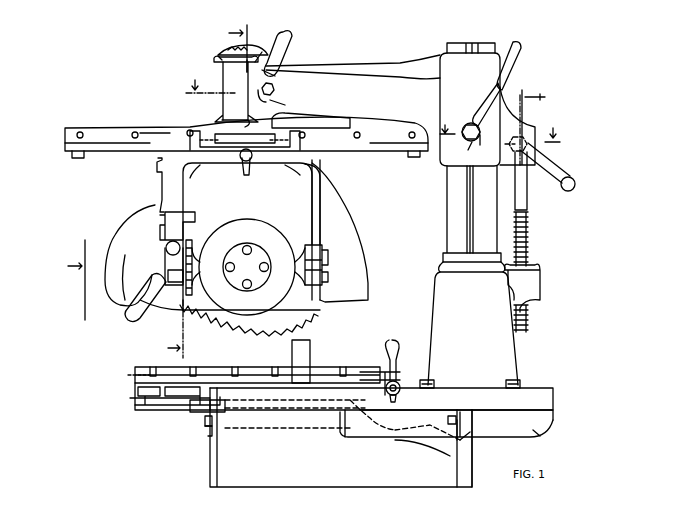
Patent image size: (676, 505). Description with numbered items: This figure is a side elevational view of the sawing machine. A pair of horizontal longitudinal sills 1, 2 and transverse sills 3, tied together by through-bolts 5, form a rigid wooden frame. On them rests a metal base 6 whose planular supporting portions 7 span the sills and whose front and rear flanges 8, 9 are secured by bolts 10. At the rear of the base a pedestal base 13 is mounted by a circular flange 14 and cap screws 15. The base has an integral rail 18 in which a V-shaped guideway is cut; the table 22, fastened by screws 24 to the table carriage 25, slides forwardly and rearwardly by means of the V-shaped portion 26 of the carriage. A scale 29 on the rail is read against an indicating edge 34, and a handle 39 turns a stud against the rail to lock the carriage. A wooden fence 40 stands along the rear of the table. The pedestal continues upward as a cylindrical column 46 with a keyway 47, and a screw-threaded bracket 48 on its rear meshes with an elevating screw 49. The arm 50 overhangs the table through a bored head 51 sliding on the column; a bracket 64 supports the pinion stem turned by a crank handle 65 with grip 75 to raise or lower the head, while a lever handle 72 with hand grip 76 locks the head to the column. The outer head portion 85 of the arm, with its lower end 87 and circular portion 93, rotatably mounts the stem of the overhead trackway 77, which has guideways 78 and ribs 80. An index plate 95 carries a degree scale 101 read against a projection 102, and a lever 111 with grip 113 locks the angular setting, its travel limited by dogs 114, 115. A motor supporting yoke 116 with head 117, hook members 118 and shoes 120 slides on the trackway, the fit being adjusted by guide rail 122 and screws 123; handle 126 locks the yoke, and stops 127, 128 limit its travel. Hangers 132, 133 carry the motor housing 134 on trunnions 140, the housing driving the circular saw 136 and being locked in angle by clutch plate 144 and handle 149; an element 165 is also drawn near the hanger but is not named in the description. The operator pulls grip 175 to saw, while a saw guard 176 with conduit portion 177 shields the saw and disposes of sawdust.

The supporting frame member or sill 1 is at (212, 468).
The supporting frame member or sill 2 is at (474, 462).
The transverse sill 3 is at (71, 280).
The through-bolt 5 is at (171, 329).
The metal base 6 is at (550, 430).
The supporting portion 7 is at (556, 414).
The front flange 8 is at (233, 48).
The rear flange 9 is at (209, 81).
The bolt 10 is at (447, 123).
The pedestal base 13 is at (435, 297).
The circular flange 14 is at (553, 392).
The cap screw 15 is at (433, 380).
The rail 18 is at (204, 412).
The table 22 is at (145, 366).
The screw 24 is at (124, 374).
The table carriage 25 is at (134, 395).
The V-shaped portion 26 is at (135, 408).
The scale 29 is at (371, 410).
The indicating edge 34 is at (372, 390).
The handle 39 is at (399, 350).
The fence 40 is at (311, 356).
The cylindrical column 46 is at (445, 204).
The keyway 47 is at (466, 182).
The screw-threaded bracket 48 is at (536, 292).
The elevating screw 49 is at (530, 206).
The arm 50 is at (366, 70).
The head 51 is at (442, 58).
The bracket 64 is at (538, 127).
The crank handle 65 is at (546, 168).
The lever handle 72 is at (490, 100).
The handle grip 75 is at (576, 183).
The hand grip 76 is at (521, 46).
The trackway 77 is at (98, 143).
The guideway 78 is at (479, 134).
The rib 80 is at (222, 127).
The head portion 85 is at (222, 68).
The lower end of head 87 is at (240, 122).
The circular portion of head 93 is at (255, 65).
The index plate 95 is at (258, 50).
The scale 101 is at (228, 48).
The projection 102 is at (217, 58).
The lever 111 is at (275, 74).
The handle grip 113 is at (291, 35).
The dog 114 is at (275, 103).
The dog 115 is at (282, 90).
The motor supporting yoke 116 is at (212, 166).
The head 117 is at (266, 165).
The hook member 118 is at (295, 128).
The shoe 120 is at (243, 140).
The guide rail 122 is at (147, 130).
The screw 123 is at (133, 132).
The lever or handle 126 is at (244, 176).
The stop 127 is at (66, 153).
The stop 128 is at (410, 156).
The hanger 132 is at (316, 222).
The hanger 133 is at (180, 212).
The motor housing 134 is at (260, 228).
The circular saw 136 is at (212, 330).
The trunnion 140 is at (329, 268).
The clutch plate 144 is at (192, 274).
The handle 149 is at (130, 318).
The pivot 165 is at (170, 242).
The grip 175 is at (162, 183).
The saw guard 176 is at (350, 232).
The conduit portion 177 is at (115, 300).